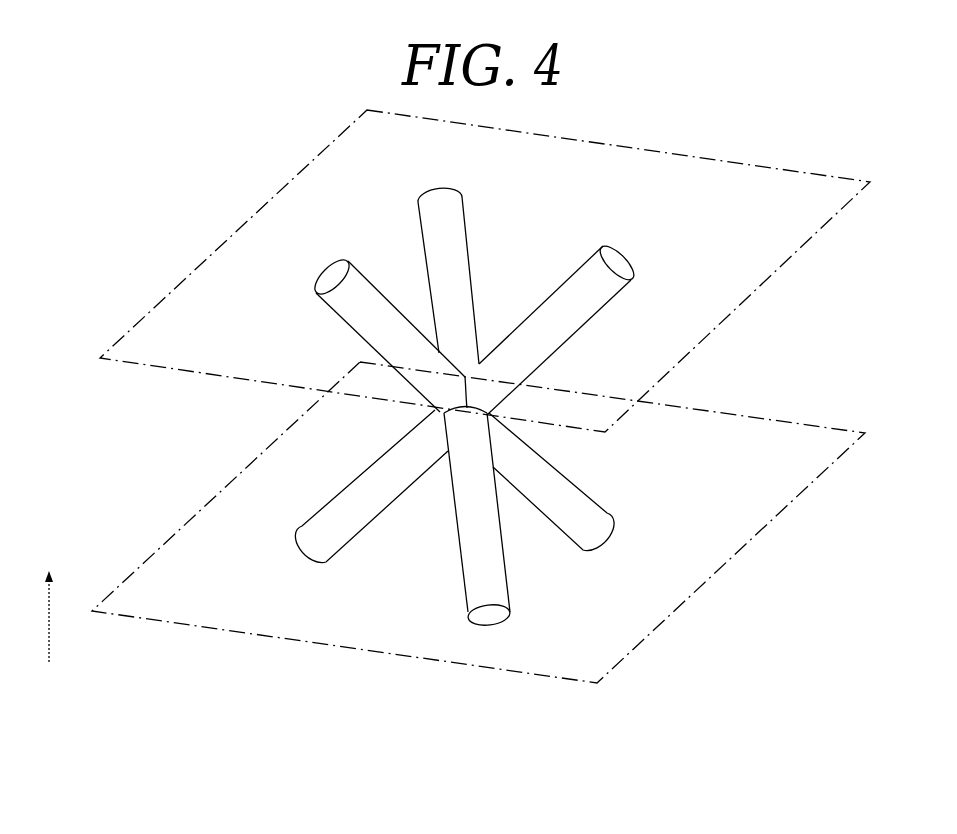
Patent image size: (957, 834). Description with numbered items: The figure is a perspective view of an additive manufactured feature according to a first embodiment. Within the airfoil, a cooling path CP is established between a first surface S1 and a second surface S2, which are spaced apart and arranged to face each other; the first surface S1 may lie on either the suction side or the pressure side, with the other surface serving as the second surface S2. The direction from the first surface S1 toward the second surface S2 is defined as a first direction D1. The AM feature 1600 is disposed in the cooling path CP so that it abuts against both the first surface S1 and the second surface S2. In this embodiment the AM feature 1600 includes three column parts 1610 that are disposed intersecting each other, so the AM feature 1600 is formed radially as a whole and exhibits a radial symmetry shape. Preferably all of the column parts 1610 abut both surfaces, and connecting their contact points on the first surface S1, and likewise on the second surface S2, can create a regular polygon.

The second surface S2 is at (158, 340).
The first surface S1 is at (170, 568).
The cooling path CP is at (800, 327).
The AM feature 1600 is at (575, 460).
The column parts 1610 is at (541, 482).
The first direction D1 is at (52, 633).